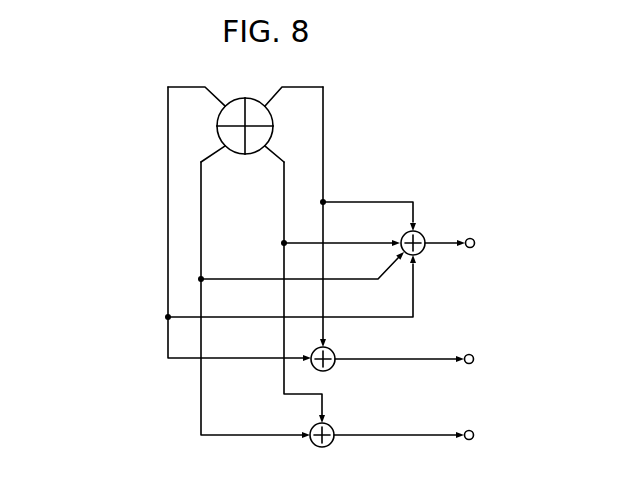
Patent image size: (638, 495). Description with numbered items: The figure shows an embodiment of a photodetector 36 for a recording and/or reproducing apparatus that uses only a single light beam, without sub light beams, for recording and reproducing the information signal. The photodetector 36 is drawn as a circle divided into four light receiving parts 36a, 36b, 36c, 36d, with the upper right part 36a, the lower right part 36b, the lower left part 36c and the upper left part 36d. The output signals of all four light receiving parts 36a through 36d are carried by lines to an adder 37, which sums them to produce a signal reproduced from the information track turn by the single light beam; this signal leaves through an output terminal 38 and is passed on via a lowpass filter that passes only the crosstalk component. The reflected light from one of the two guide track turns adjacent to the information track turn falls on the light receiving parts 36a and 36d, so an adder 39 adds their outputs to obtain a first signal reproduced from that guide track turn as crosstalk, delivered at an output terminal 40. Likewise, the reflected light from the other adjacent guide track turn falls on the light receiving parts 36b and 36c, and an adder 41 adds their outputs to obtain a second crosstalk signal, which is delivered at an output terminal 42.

The photodetector 36 is at (245, 108).
The light receiving part 36a is at (271, 114).
The light receiving part 36b is at (271, 138).
The light receiving part 36c is at (220, 137).
The light receiving part 36d is at (221, 116).
The adder 37 is at (422, 234).
The output terminal 38 is at (473, 239).
The adder 39 is at (332, 351).
The output terminal 40 is at (472, 355).
The adder 41 is at (331, 427).
The output terminal 42 is at (472, 431).